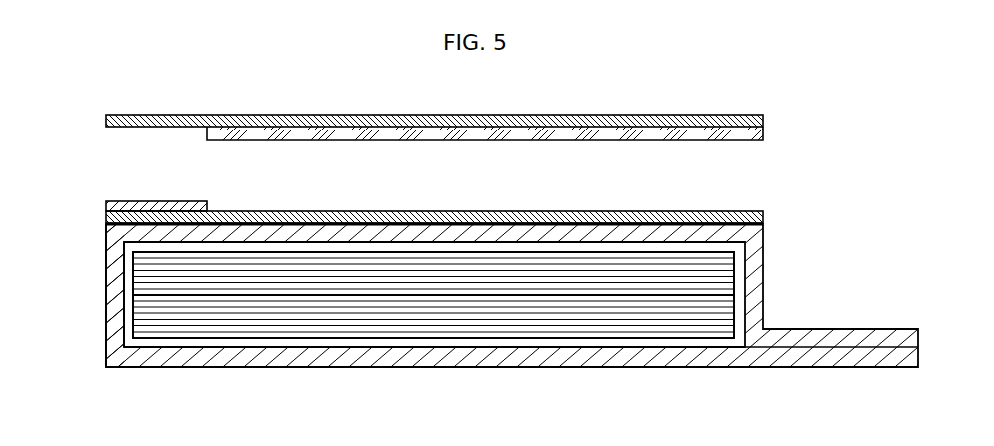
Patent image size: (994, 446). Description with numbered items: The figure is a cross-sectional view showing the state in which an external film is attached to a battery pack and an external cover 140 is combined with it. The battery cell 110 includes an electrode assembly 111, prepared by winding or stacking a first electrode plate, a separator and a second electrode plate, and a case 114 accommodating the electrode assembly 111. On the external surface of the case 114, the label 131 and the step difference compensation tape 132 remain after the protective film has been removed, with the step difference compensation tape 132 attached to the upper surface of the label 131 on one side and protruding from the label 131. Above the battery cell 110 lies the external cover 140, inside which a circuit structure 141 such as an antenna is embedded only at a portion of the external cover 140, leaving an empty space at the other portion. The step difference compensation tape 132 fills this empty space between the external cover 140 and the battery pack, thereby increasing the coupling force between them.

The battery cell 110 is at (776, 271).
The electrode assembly 111 is at (651, 344).
The case 114 is at (113, 297).
The label 131 is at (108, 218).
The step difference compensation tape 132 is at (112, 204).
The external cover 140 is at (758, 118).
The circuit structure 141 is at (758, 133).